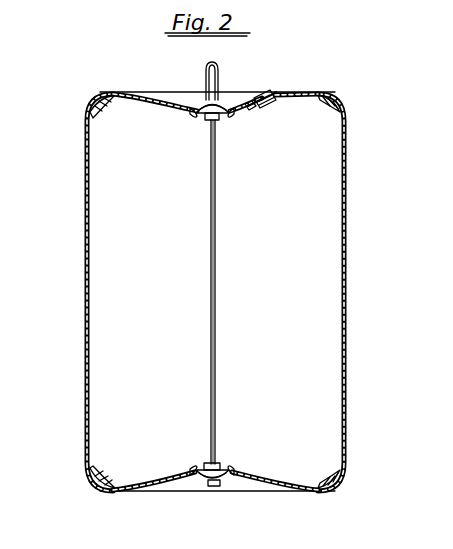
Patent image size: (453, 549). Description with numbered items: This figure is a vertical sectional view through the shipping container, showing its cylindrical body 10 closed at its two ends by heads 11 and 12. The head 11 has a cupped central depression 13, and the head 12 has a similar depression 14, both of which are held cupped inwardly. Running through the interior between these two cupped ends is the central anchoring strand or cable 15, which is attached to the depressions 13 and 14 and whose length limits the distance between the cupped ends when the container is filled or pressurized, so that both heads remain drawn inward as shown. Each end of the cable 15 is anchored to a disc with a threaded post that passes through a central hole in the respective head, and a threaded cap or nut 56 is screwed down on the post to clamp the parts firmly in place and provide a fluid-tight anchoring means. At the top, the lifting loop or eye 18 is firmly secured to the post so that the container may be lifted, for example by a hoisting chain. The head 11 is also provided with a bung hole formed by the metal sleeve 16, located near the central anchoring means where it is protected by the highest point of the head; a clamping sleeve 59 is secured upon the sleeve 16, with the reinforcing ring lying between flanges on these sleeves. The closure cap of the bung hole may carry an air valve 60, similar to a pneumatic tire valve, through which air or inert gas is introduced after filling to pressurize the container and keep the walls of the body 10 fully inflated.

The cylindrical body 10 is at (80, 317).
The head 11 is at (157, 86).
The head 12 is at (171, 498).
The cupped central depression 13 is at (190, 108).
The cupped central depression 14 is at (240, 470).
The central anchoring strand or cable 15 is at (216, 240).
The metal sleeve 16 is at (256, 106).
The loop or eye 18 is at (219, 80).
The threaded cap or nut 56 is at (230, 487).
The clamping sleeve 59 is at (268, 96).
The air valve 60 is at (257, 96).